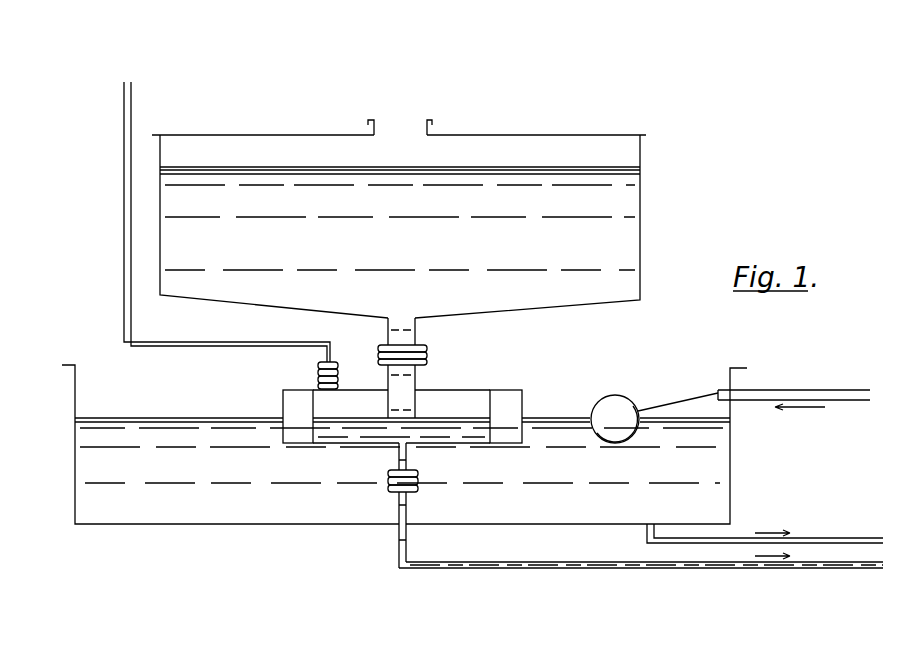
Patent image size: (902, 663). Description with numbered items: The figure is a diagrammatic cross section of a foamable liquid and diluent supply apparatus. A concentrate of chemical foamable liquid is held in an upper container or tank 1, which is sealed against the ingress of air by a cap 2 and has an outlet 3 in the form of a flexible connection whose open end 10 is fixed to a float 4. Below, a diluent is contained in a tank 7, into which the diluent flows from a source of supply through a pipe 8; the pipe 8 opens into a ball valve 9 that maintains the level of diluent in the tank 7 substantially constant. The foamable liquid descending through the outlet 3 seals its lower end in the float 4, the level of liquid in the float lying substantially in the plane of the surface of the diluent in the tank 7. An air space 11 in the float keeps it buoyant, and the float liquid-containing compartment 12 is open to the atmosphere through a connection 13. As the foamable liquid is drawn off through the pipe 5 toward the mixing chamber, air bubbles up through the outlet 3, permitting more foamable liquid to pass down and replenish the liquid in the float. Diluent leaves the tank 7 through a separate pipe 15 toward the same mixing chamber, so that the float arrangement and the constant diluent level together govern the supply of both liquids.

The tank 1 is at (618, 224).
The cap 2 is at (390, 128).
The outlet 3 is at (400, 332).
The float 4 is at (498, 398).
The pipe 5 is at (519, 562).
The tank 7 is at (693, 457).
The pipe 8 is at (767, 392).
The ball valve 9 is at (668, 403).
The open end 10 is at (415, 418).
The air space 11 is at (289, 392).
The float liquid-containing compartment 12 is at (352, 395).
The connection 13 is at (124, 229).
The pipe 15 is at (806, 541).